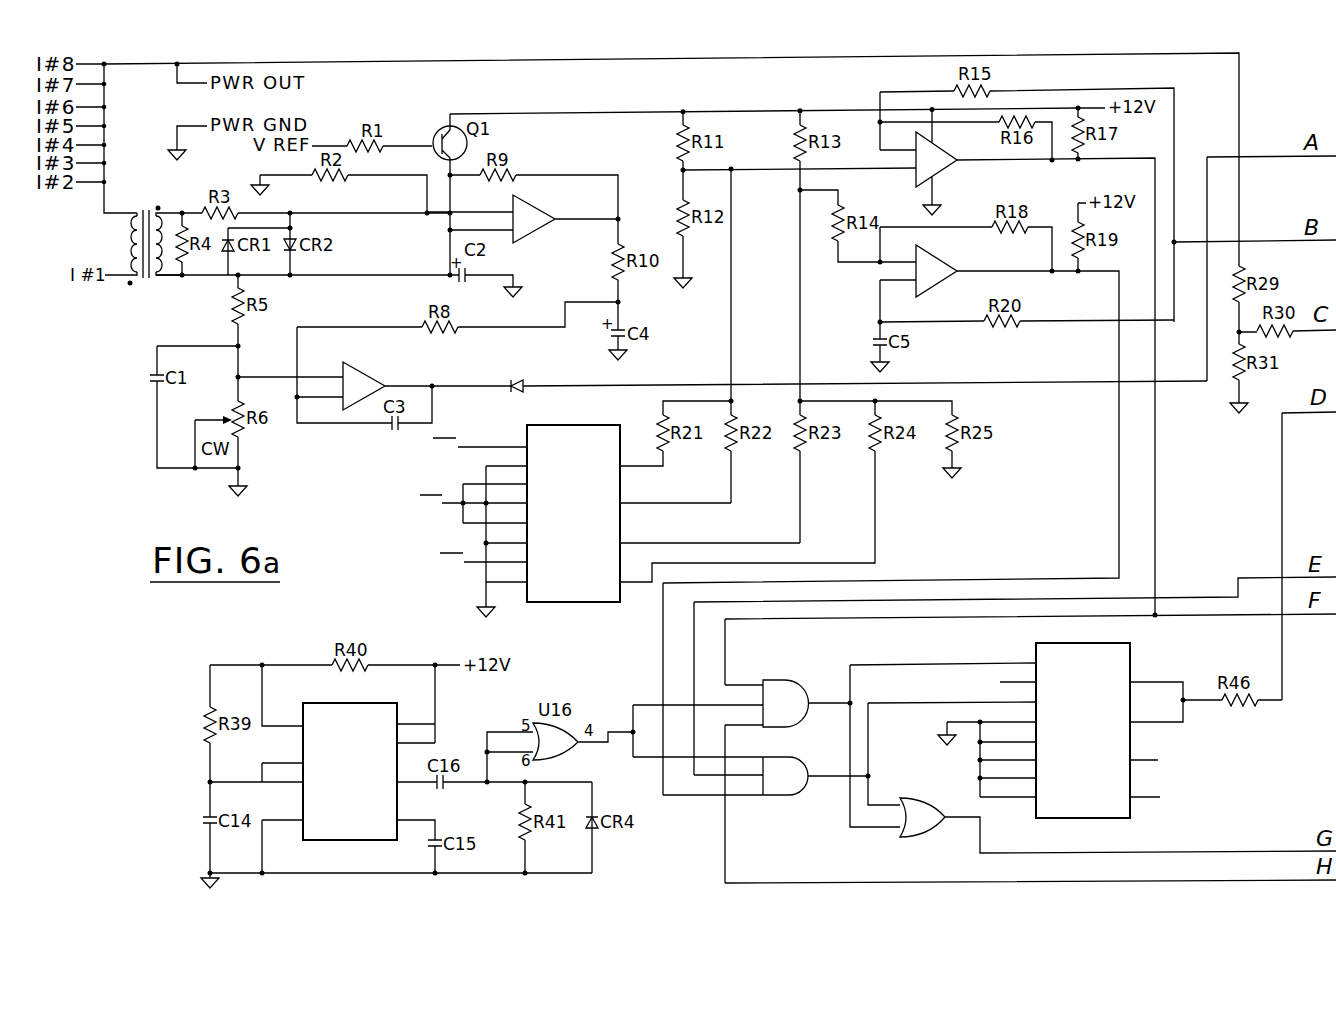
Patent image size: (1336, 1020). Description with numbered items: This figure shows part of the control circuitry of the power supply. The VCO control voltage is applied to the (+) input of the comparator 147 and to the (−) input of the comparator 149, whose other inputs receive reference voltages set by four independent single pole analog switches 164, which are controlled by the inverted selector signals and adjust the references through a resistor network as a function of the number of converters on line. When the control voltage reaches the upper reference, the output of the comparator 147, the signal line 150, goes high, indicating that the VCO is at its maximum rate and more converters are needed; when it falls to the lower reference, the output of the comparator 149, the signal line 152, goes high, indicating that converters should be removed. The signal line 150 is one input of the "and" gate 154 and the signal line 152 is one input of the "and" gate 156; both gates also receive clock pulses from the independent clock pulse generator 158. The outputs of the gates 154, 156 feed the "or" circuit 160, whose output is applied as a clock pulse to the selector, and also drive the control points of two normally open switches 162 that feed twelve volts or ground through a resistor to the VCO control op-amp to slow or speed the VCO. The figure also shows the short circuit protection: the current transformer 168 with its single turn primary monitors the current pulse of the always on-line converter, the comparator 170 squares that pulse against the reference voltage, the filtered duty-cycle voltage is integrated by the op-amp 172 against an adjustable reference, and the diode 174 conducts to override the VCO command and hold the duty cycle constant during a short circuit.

The comparator 147 is at (964, 162).
The comparator 149 is at (982, 275).
The signal line 150 is at (1093, 364).
The signal line 152 is at (895, 415).
The "and" gate 154 is at (741, 677).
The "and" gate 156 is at (750, 796).
The clock pulse generator 158 is at (322, 733).
The "or" circuit 160 is at (1096, 827).
The switches 162 is at (1082, 719).
The switches 164 is at (530, 508).
The current transformer 168 is at (128, 270).
The comparator 170 is at (522, 233).
The op-amp 172 is at (377, 375).
The diode 174 is at (819, 366).